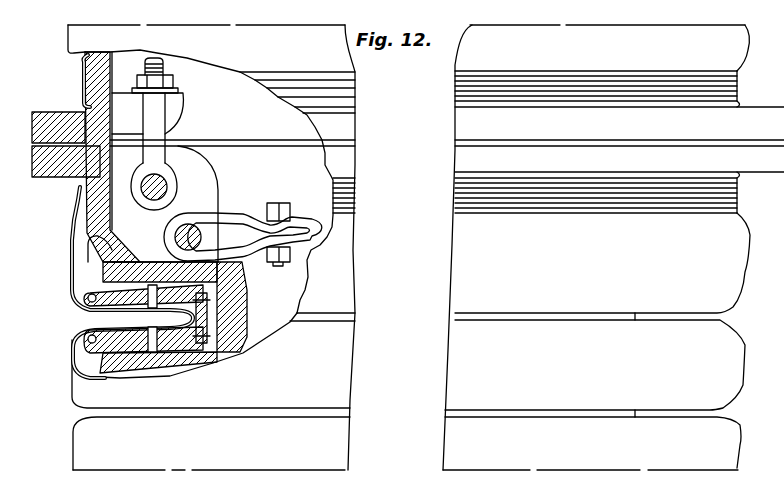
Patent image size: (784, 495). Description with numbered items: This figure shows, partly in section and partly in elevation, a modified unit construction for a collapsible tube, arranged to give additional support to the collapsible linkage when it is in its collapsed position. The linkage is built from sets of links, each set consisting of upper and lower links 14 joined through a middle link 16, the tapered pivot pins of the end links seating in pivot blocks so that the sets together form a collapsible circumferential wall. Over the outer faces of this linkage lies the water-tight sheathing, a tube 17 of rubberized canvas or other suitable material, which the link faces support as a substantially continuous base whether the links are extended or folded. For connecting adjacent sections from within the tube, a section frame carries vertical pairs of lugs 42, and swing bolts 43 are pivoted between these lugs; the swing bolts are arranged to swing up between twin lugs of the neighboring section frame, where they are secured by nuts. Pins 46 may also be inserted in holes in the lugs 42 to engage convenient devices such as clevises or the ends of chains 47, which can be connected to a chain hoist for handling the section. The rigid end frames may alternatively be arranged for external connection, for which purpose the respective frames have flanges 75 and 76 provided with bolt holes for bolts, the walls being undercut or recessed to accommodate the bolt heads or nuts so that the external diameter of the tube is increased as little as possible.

The upper and lower links 14 is at (158, 290).
The middle link 16 is at (243, 305).
The tube of rubberized canvas 17 is at (68, 298).
The lugs 42 is at (212, 177).
The swing bolts 43 is at (160, 133).
The pins 46 is at (207, 222).
The chains 47 is at (291, 246).
The flange 75 is at (43, 112).
The flange 76 is at (36, 178).